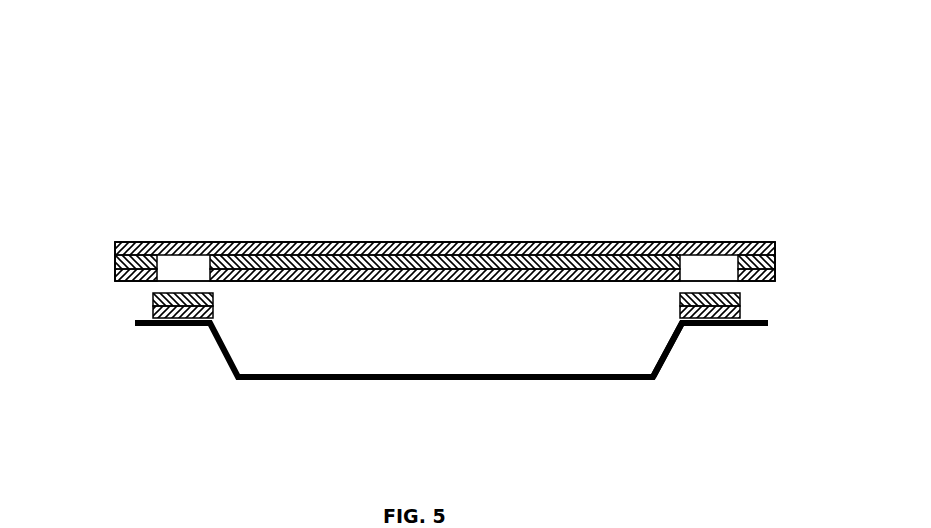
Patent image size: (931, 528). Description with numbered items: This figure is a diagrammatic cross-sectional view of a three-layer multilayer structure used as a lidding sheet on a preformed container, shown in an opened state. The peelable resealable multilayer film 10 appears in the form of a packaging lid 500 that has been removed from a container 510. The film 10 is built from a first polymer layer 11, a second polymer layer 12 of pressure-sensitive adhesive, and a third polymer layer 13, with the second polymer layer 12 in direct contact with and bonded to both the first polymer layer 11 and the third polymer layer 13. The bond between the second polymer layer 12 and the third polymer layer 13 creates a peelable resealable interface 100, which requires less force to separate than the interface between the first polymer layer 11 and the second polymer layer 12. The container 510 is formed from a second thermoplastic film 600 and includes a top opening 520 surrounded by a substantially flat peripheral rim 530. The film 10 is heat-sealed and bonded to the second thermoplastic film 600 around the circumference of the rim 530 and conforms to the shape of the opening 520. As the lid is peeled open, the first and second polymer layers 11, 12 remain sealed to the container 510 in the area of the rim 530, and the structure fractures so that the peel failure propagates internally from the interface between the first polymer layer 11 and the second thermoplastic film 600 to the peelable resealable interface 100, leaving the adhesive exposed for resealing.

The peelable resealable multilayer film 10 is at (418, 128).
The first polymer layer 11 is at (115, 278).
The second polymer layer 12 is at (115, 262).
The third polymer layer 13 is at (115, 250).
The peelable resealable interface 100 is at (183, 253).
The packaging lid 500 is at (475, 215).
The container 510 is at (305, 381).
The top opening 520 is at (580, 310).
The peripheral rim 530 is at (137, 322).
The second thermoplastic film 600 is at (768, 325).